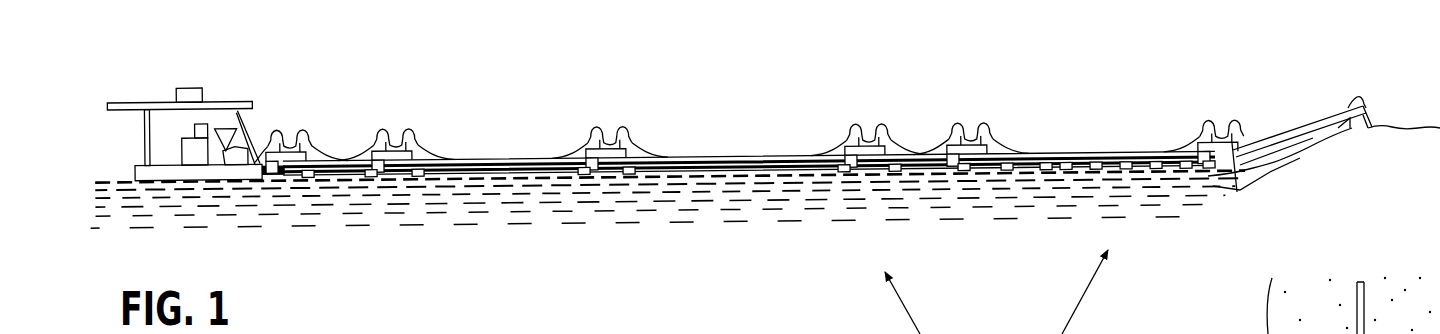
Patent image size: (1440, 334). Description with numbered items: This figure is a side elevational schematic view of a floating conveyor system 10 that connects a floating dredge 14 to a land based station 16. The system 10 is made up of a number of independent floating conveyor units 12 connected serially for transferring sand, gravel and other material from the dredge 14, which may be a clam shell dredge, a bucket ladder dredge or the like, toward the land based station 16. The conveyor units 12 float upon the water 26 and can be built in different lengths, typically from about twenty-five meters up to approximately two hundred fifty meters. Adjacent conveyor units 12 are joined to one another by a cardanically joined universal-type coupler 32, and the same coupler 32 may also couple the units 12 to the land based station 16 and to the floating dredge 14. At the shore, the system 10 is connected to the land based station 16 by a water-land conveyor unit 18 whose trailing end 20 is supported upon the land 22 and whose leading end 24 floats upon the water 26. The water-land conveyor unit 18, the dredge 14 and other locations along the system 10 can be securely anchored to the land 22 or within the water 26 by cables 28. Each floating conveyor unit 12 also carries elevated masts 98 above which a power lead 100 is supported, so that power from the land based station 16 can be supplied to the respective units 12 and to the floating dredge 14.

The floating conveyor system 10 is at (372, 258).
The floating conveyor unit 12 is at (352, 137).
The floating dredge 14 is at (133, 90).
The land based station 16 is at (1388, 103).
The water-land conveyor unit 18 is at (1322, 70).
The trailing end 20 is at (1385, 113).
The land 22 is at (1385, 180).
The leading end 24 is at (1203, 198).
The water 26 is at (667, 200).
The cables 28 is at (1313, 330).
The universal-type coupler 32 is at (285, 186).
The elevated masts 98 is at (310, 148).
The power lead 100 is at (425, 151).